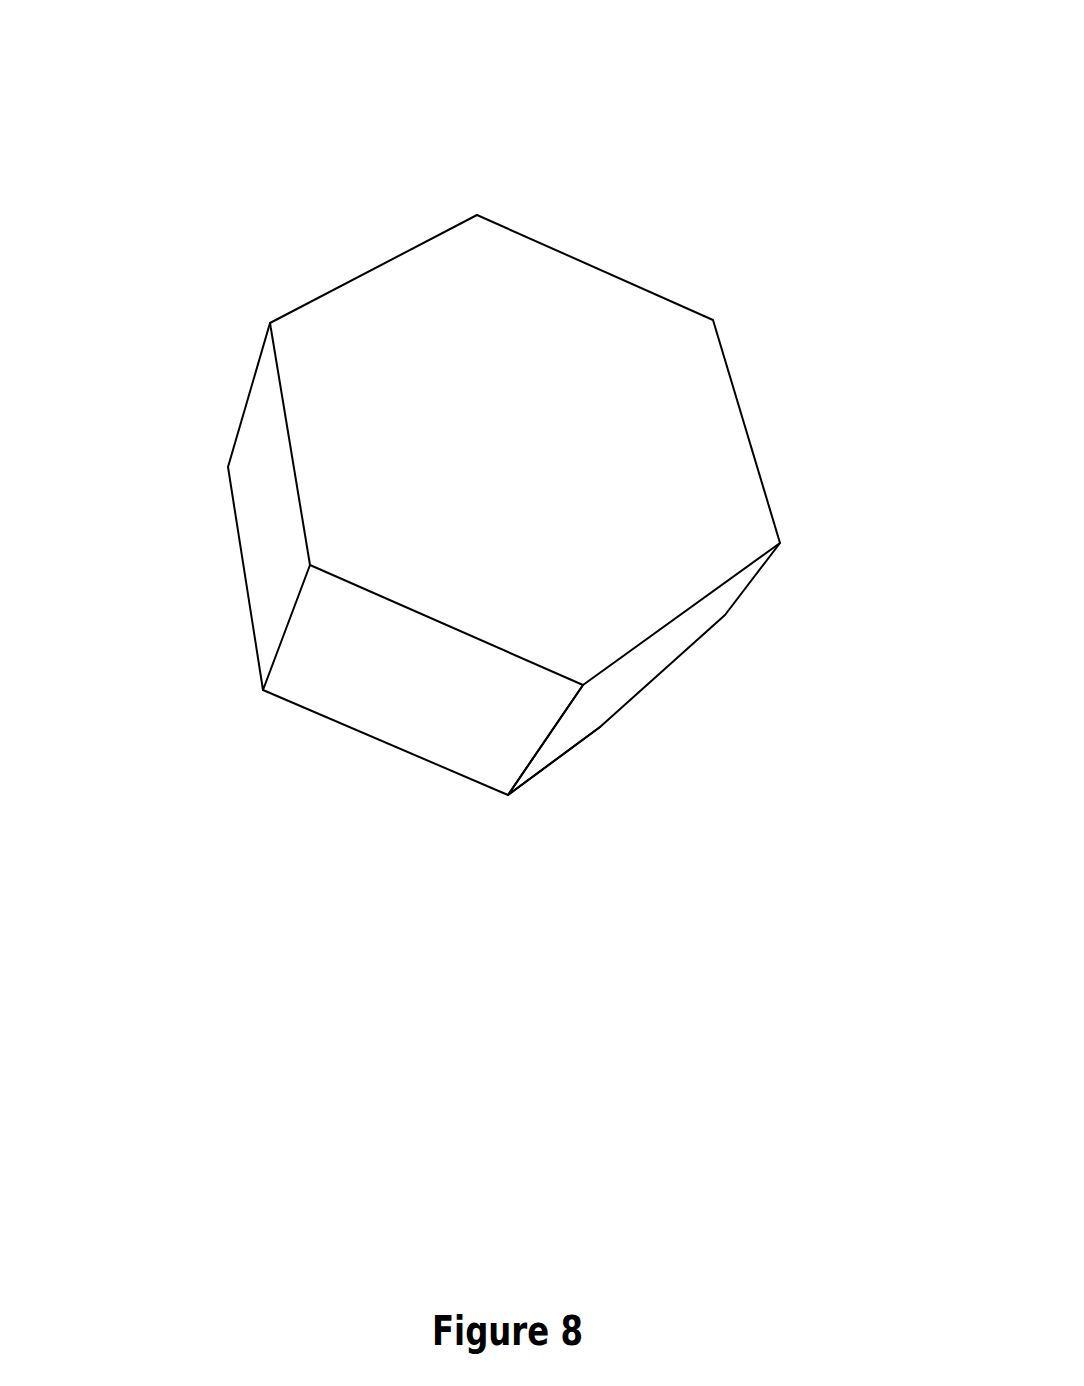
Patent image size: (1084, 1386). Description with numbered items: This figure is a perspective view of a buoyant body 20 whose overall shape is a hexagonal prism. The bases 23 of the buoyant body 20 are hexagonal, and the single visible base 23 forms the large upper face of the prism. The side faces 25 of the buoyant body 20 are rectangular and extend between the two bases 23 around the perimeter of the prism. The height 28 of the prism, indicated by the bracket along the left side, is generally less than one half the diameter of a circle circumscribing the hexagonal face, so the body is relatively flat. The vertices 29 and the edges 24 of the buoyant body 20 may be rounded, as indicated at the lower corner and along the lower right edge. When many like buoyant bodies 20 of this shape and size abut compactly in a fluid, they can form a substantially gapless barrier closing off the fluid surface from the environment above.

The buoyant body 20 is at (504, 485).
The bases 23 is at (525, 392).
The edges 24 is at (723, 669).
The side faces 25 is at (437, 715).
The height 28 is at (247, 308).
The vertices 29 is at (585, 828).